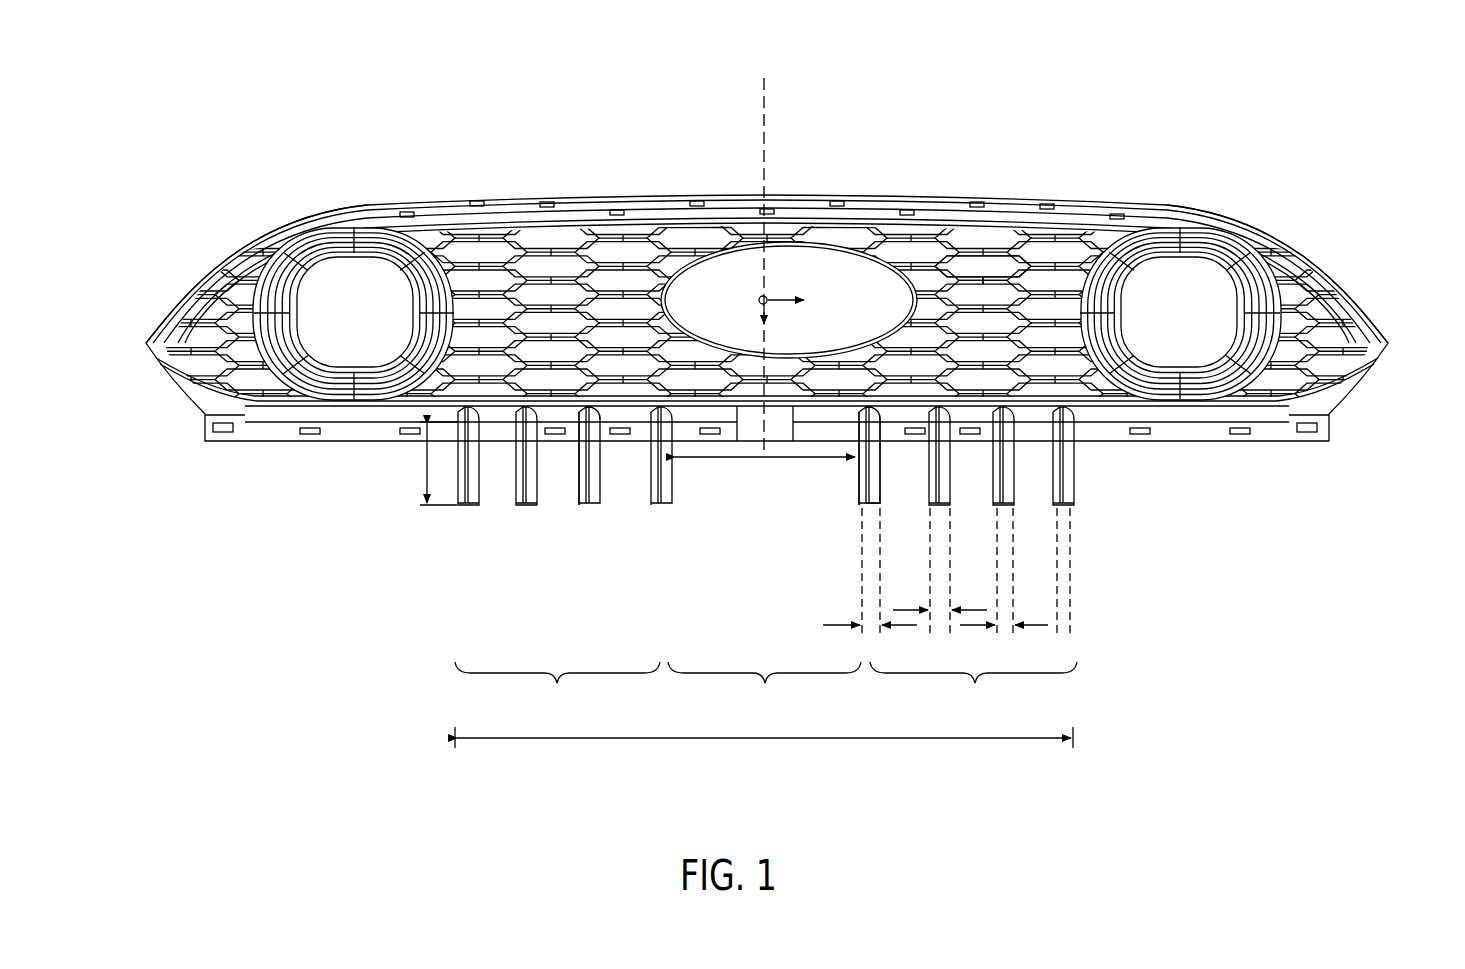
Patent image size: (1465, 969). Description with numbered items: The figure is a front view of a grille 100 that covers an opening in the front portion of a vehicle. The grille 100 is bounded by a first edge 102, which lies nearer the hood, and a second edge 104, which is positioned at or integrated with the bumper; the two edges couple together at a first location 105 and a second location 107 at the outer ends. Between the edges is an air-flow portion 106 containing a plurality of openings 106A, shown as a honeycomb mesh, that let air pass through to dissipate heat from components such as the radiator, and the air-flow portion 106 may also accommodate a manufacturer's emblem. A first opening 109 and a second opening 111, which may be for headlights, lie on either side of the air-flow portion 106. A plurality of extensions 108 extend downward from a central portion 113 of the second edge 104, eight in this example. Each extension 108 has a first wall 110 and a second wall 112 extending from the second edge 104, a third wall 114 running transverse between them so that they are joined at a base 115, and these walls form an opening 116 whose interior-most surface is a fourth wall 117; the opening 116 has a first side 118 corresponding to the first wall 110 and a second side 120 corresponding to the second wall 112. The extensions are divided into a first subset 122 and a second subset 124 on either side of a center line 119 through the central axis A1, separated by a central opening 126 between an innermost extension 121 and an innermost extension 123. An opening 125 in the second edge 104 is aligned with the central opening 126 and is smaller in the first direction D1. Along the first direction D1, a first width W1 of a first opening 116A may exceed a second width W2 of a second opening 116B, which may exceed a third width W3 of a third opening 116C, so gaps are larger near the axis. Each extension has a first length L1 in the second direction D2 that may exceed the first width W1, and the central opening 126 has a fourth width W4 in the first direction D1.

The grille 100 is at (1240, 108).
The first edge 102 is at (1178, 214).
The second edge 104 is at (1228, 441).
The first location 105 is at (143, 352).
The air-flow portion 106 is at (1062, 218).
The plurality of openings 106A is at (985, 262).
The second location 107 is at (1388, 355).
The plurality of extensions 108 is at (863, 512).
The first opening 109 is at (373, 322).
The first wall 110 is at (605, 480).
The second opening 111 is at (1195, 322).
The second wall 112 is at (578, 486).
The portion 113 is at (765, 740).
The third wall 114 is at (863, 507).
The base 115 is at (461, 509).
The opening 116 is at (587, 500).
The first opening 116A is at (870, 482).
The second opening 116B is at (942, 482).
The third opening 116C is at (1005, 462).
The fourth wall 117 is at (665, 506).
The first side 118 is at (598, 492).
The center line 119 is at (775, 120).
The second side 120 is at (580, 500).
The innermost extension 121 is at (860, 492).
The first subset 122 is at (973, 688).
The innermost extension 123 is at (662, 500).
The second subset 124 is at (557, 688).
The opening 125 is at (775, 440).
The central opening 126 is at (764, 688).
The central axis A1 is at (760, 296).
The first direction D1 is at (784, 297).
The second direction D2 is at (762, 320).
The first length L1 is at (427, 463).
The first width W1 is at (869, 572).
The second width W2 is at (939, 572).
The third width W3 is at (1015, 572).
The fourth width W4 is at (765, 472).